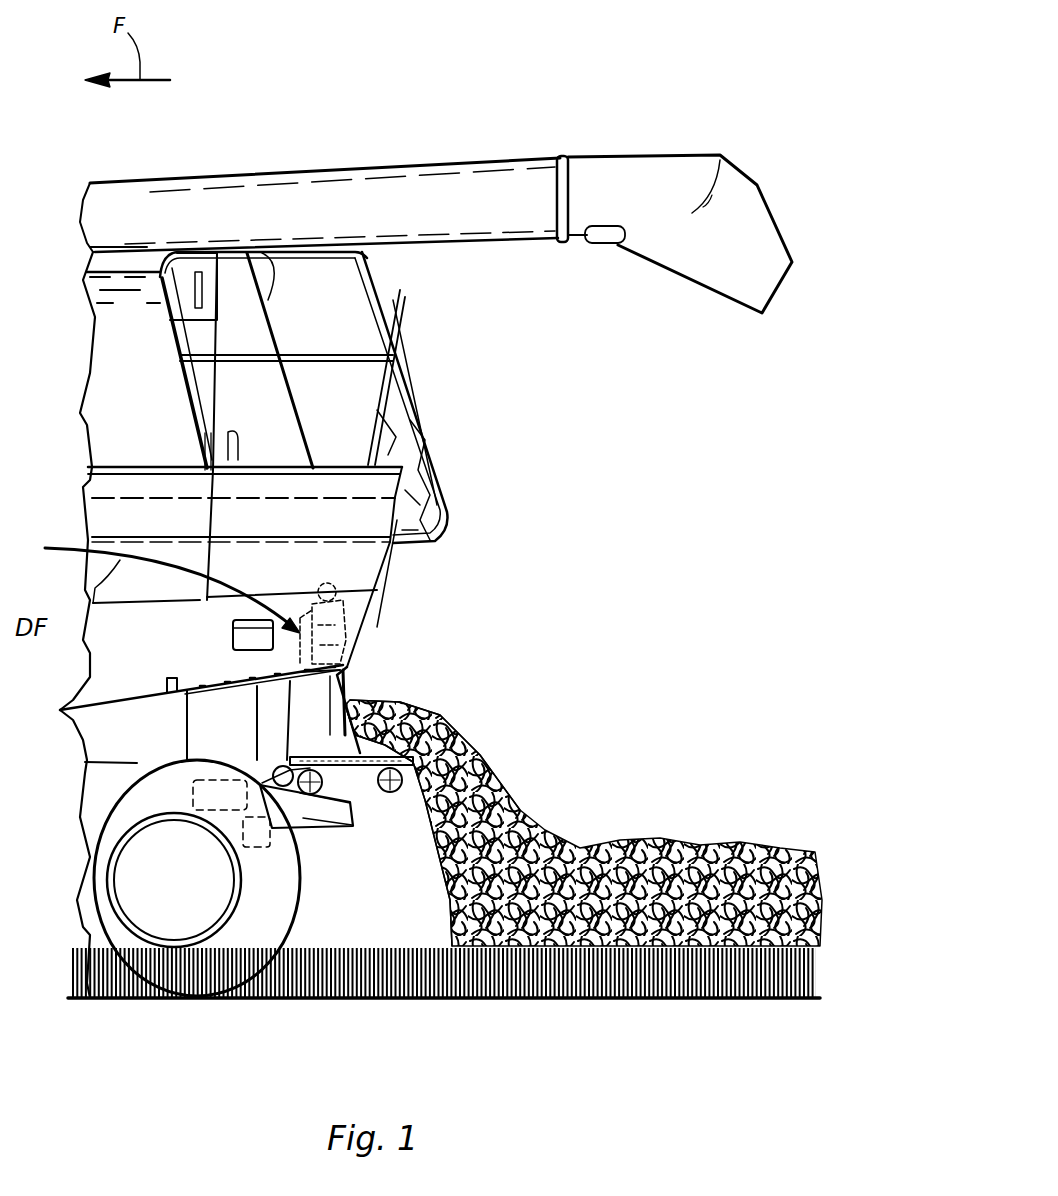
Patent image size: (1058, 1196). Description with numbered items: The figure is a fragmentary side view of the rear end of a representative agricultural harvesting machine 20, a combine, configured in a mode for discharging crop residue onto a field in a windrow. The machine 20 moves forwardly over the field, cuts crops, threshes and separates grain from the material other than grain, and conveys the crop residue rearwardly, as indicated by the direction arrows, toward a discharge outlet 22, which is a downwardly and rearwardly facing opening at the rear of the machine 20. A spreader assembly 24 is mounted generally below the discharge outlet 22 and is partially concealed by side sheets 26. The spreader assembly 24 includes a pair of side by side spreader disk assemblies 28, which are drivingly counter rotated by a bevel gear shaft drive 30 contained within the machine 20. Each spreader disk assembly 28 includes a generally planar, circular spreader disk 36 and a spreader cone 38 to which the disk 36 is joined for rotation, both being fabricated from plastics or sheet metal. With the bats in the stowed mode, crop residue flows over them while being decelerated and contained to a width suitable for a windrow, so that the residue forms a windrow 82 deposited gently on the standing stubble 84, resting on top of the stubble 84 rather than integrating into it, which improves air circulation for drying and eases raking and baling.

The agricultural harvesting machine 20 is at (503, 124).
The discharge outlet 22 is at (345, 673).
The spreader assembly 24 is at (358, 701).
The side sheets 26 is at (300, 703).
The spreader disk assemblies 28 is at (372, 690).
The bevel gear shaft drive 30 is at (352, 623).
The spreader disk 36 is at (350, 773).
The spreader cone 38 is at (402, 713).
The windrow 82 is at (650, 848).
The standing stubble 84 is at (820, 972).